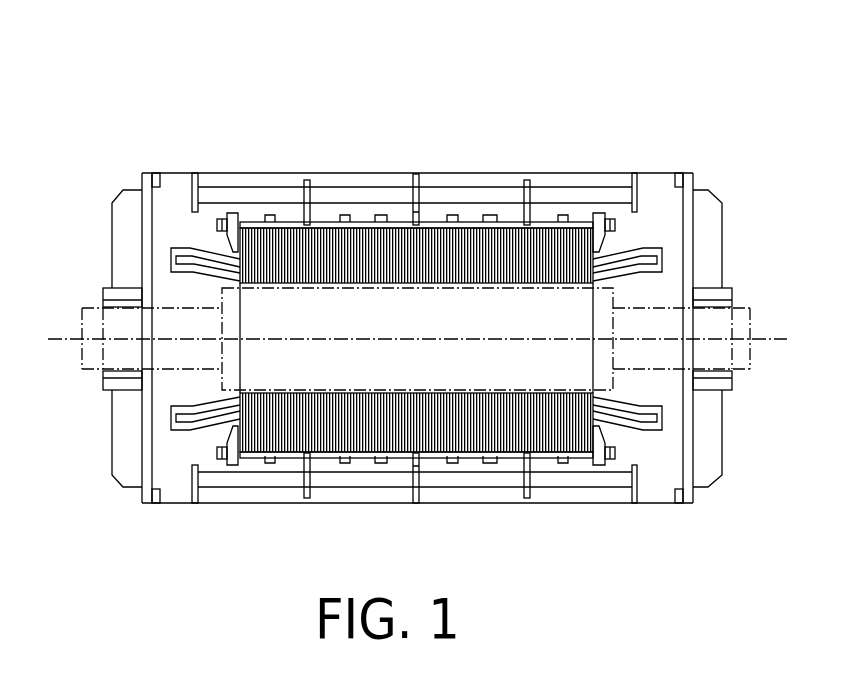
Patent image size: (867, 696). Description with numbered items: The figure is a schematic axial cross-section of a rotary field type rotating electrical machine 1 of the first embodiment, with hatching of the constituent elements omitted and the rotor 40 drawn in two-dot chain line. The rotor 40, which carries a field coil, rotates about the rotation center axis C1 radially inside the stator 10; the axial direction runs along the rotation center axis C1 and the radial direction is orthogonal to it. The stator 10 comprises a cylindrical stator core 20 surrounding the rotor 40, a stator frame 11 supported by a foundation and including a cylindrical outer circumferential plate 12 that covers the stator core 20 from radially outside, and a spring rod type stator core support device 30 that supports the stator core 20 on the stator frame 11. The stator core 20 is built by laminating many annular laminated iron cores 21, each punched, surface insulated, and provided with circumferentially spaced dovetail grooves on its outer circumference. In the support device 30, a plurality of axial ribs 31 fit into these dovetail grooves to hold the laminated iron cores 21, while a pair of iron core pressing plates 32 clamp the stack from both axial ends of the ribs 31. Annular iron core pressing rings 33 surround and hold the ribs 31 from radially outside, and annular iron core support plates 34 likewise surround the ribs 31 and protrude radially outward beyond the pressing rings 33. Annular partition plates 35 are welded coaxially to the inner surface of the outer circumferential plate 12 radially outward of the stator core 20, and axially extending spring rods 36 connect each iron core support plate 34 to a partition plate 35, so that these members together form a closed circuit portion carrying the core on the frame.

The rotating electrical machine 1 is at (134, 39).
The rotation center axis C1 is at (52, 338).
The stator 10 is at (701, 169).
The stator frame 11 is at (617, 166).
The outer circumferential plate 12 is at (562, 172).
The stator core 20 is at (440, 220).
The laminated iron core 21 is at (258, 226).
The stator core support device 30 is at (177, 204).
The axial rib 31 is at (400, 225).
The iron core pressing plate 32 is at (235, 215).
The iron core pressing ring 33 is at (270, 215).
The iron core support plate 34 is at (307, 180).
The partition plate 35 is at (194, 186).
The spring rod 36 is at (242, 195).
The rotor 40 is at (628, 293).